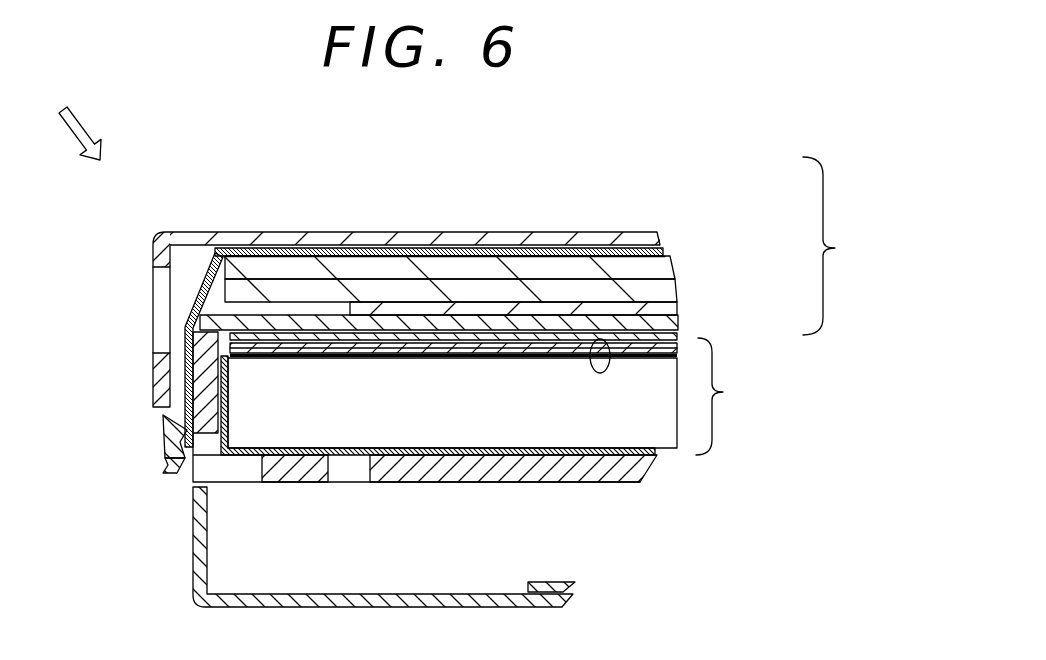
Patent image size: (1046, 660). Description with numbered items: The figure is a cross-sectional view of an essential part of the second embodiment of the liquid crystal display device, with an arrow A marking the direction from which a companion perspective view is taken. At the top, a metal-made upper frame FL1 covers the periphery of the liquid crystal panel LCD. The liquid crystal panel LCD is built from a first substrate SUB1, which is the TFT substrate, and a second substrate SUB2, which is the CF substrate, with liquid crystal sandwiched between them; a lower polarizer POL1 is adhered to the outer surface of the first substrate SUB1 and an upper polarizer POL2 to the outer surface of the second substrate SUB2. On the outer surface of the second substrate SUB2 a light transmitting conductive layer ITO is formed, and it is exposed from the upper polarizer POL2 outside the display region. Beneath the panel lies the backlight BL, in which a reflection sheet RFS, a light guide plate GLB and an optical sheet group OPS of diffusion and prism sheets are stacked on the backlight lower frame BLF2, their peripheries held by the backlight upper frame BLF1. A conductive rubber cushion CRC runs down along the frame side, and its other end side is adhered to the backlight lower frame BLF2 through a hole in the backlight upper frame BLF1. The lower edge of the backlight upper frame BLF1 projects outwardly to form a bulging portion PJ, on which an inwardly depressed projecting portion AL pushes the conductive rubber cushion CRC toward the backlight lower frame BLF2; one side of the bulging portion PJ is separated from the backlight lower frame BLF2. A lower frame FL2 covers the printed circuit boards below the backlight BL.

The arrow A is at (85, 113).
The upper frame FL1 is at (300, 231).
The conductive rubber cushion CRC is at (193, 233).
The backlight upper frame BLF1 is at (222, 318).
The light transmitting conductive layer ITO is at (590, 250).
The upper polarizer POL2 is at (640, 257).
The second substrate SUB2 is at (660, 268).
The first substrate SUB1 is at (667, 290).
The lower polarizer POL1 is at (670, 310).
The liquid crystal panel LCD is at (563, 244).
The backlight BL is at (497, 456).
The optical sheet group OPS is at (604, 372).
The light guide plate GLB is at (452, 403).
The reflection sheet RFS is at (603, 450).
The backlight lower frame BLF2 is at (422, 467).
The projecting portion AL is at (163, 443).
The bulging portion PJ is at (163, 465).
The lower frame FL2 is at (193, 557).